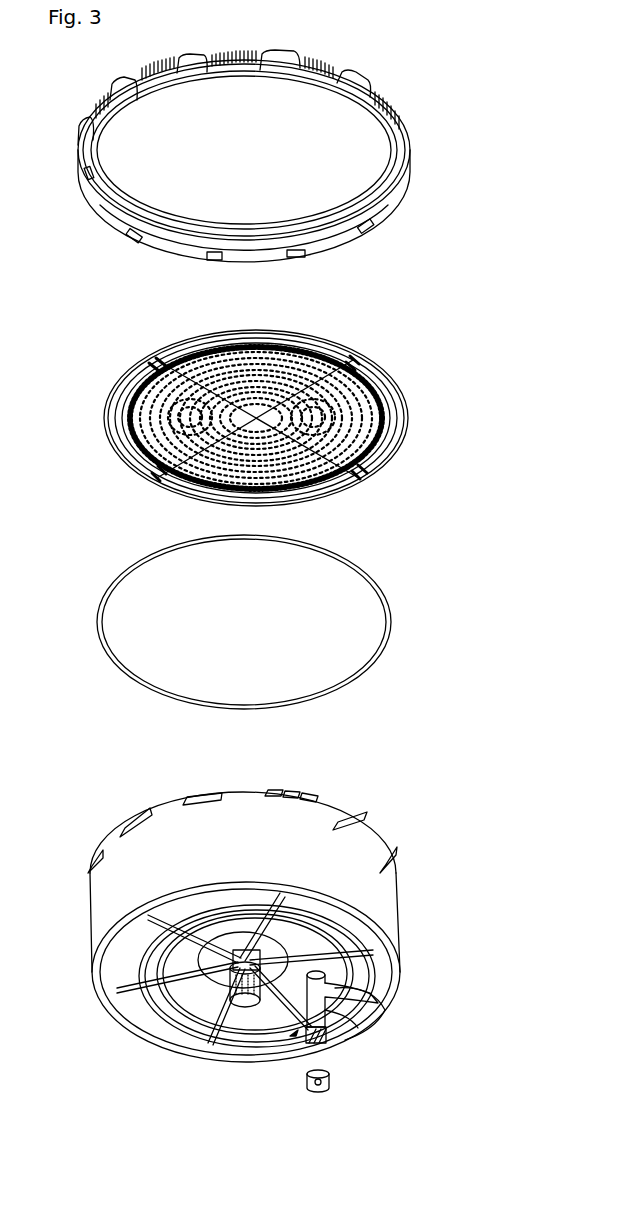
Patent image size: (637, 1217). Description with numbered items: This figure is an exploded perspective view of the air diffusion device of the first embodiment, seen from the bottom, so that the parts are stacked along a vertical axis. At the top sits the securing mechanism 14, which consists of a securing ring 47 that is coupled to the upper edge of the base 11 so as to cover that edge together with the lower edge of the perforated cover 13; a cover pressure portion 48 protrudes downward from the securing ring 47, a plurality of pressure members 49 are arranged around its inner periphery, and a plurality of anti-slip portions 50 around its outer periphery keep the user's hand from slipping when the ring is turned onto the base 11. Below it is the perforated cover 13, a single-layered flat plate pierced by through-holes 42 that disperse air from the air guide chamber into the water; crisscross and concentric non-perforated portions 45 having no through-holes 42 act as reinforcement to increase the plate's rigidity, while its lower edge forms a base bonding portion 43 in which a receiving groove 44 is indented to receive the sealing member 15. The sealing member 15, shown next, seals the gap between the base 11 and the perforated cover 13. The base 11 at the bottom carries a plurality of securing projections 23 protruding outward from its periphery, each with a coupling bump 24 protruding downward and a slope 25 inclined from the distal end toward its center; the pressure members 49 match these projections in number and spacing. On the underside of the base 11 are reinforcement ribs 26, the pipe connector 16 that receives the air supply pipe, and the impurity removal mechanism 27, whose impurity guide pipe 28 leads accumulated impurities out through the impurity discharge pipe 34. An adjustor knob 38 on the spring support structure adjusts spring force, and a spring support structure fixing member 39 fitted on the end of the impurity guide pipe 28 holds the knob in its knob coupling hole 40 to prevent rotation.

The base 11 is at (253, 932).
The perforated cover 13 is at (289, 425).
The securing mechanism 14 is at (287, 156).
The sealing member 15 is at (391, 625).
The pipe connector 16 is at (140, 1023).
The securing projections 23 is at (273, 793).
The coupling bump 24 is at (290, 797).
The slope 25 is at (303, 798).
The reinforcement ribs 26 is at (228, 975).
The impurity removal mechanism 27 is at (293, 1034).
The impurity guide pipe 28 is at (340, 1024).
The impurity discharge pipe 34 is at (372, 997).
The adjustor knob 38 is at (325, 1040).
The spring support structure fixing member 39 is at (342, 1094).
The knob coupling hole 40 is at (318, 1092).
The through-holes 42 is at (388, 437).
The base bonding portion 43 is at (392, 385).
The receiving groove 44 is at (397, 412).
The non-perforated portion 45 is at (157, 362).
The securing ring 47 is at (400, 200).
The cover pressure portion 48 is at (406, 163).
The pressure members 49 is at (370, 227).
The anti-slip portions 50 is at (378, 96).